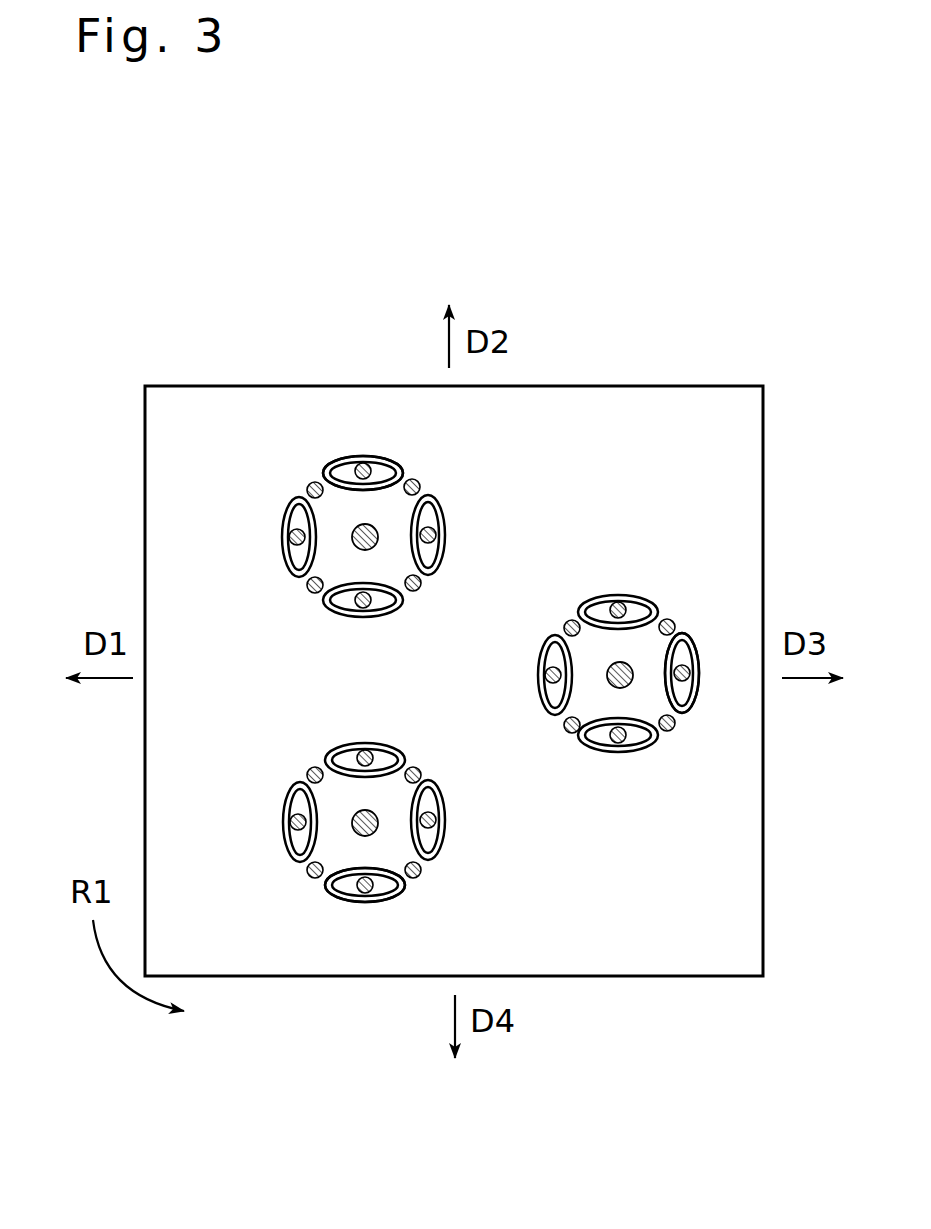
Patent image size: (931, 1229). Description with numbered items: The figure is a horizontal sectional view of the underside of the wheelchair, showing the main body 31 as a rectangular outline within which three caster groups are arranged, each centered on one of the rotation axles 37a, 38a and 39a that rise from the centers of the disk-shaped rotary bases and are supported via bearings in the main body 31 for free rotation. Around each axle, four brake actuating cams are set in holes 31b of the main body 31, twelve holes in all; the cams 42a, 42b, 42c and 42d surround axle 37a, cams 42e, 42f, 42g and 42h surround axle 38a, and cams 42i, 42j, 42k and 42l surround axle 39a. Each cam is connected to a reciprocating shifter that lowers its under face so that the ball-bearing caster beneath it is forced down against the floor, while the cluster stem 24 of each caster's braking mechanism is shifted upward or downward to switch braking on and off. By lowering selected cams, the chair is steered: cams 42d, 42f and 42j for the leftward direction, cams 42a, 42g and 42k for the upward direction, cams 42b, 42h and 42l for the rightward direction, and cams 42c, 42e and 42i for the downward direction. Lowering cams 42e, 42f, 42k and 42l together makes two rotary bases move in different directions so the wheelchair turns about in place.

The main body 31 is at (658, 376).
The holes 31b is at (378, 464).
The cluster stem 24 is at (308, 485).
The rotation axle 37a is at (370, 810).
The rotation axle 38a is at (380, 540).
The rotation axle 39a is at (608, 680).
The brake actuating cam 42a is at (300, 800).
The brake actuating cam 42b is at (337, 752).
The brake actuating cam 42c is at (440, 847).
The brake actuating cam 42d is at (388, 888).
The brake actuating cam 42e is at (296, 557).
The brake actuating cam 42f is at (340, 468).
The brake actuating cam 42g is at (432, 500).
The brake actuating cam 42h is at (338, 608).
The brake actuating cam 42i is at (557, 653).
The brake actuating cam 42j is at (597, 610).
The brake actuating cam 42k is at (693, 703).
The brake actuating cam 42l is at (647, 743).